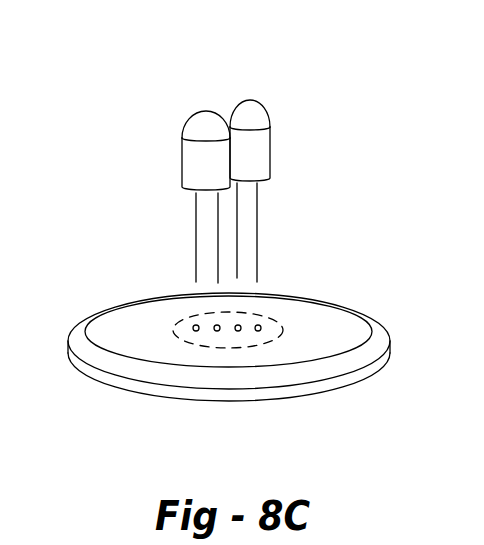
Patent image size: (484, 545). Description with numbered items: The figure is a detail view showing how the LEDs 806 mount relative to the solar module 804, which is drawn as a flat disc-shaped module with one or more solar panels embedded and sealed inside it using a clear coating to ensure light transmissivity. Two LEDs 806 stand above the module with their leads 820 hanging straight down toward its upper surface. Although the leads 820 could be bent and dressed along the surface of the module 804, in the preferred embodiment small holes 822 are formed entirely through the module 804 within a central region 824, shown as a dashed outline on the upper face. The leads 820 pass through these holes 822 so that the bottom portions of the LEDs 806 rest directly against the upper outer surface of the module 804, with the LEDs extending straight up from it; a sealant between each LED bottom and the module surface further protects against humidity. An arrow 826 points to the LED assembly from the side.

The solar module 804 is at (323, 342).
The LEDs 806 is at (230, 113).
The leads 820 is at (257, 208).
The holes 822 is at (187, 320).
The central region 824 is at (275, 313).
The LED emitter assembly 826 is at (156, 192).